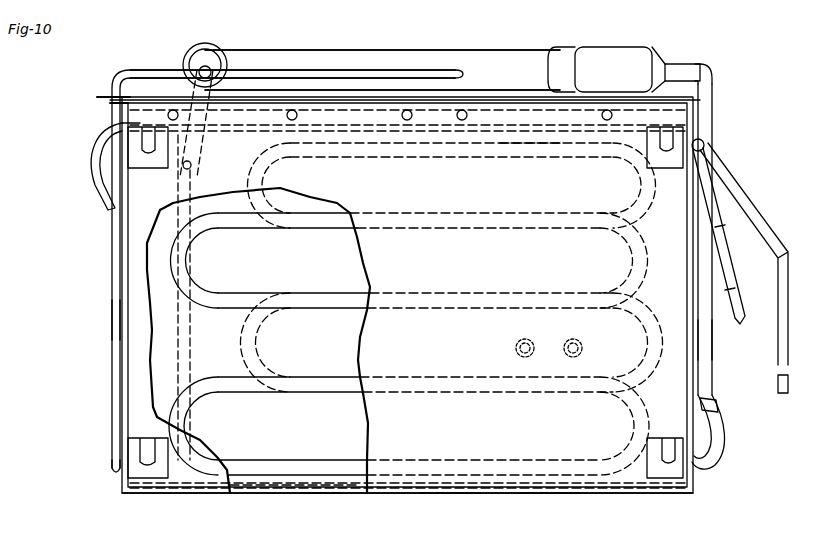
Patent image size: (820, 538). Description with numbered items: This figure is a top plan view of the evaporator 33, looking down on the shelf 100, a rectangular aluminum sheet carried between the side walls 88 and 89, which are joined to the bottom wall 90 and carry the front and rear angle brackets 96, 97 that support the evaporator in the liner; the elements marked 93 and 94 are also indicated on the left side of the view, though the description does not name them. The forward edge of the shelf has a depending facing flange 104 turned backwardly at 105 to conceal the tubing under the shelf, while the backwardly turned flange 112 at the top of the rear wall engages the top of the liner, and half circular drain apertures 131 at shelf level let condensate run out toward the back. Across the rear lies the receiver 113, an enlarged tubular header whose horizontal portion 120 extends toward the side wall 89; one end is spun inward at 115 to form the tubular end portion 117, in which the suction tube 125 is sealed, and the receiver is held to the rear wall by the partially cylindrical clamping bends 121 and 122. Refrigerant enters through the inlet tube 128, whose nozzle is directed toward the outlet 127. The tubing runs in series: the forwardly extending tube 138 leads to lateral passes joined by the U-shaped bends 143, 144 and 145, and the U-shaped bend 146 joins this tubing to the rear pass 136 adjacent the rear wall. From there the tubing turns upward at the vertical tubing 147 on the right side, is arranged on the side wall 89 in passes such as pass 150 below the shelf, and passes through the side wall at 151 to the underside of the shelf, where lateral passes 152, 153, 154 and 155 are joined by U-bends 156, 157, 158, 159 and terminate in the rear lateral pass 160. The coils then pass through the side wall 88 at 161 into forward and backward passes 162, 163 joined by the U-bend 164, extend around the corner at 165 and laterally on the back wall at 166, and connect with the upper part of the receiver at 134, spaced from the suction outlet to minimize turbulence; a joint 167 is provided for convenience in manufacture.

The evaporator 33 is at (252, 493).
The side wall 88 is at (125, 385).
The side wall 89 is at (697, 340).
The bottom wall 90 is at (315, 493).
The top plate edge 93 is at (97, 98).
The bottom frame edge 94 is at (122, 493).
The front angle bracket 96 is at (145, 480).
The rear angle bracket 97 is at (135, 169).
The shelf 100 is at (362, 430).
The facing flange 104 is at (442, 493).
The backwardly turned portion of facing flange 105 is at (537, 493).
The backwardly turned flange 112 is at (485, 100).
The receiver 113 is at (370, 40).
The spun-inward end 115 is at (640, 50).
The tubular end portion 117 is at (660, 63).
The horizontal portion of receiver 120 is at (470, 40).
The clamping bend 121 is at (565, 50).
The clamping bend 122 is at (205, 43).
The suction tube 125 is at (713, 68).
The outlet 127 is at (196, 155).
The inlet tube 128 is at (713, 103).
The drain apertures 131 is at (298, 114).
The receiver connection 134 is at (463, 74).
The rear pass 136 is at (405, 158).
The forwardly extending tube 138 is at (192, 352).
The U-shaped bend 143 is at (625, 418).
The U-shaped bend 144 is at (625, 266).
The U-shaped bend 145 is at (258, 352).
The U-shaped bend 146 is at (270, 181).
The vertical tubing 147 is at (706, 144).
The tubing pass 150 is at (706, 355).
The side wall pass-through 151 is at (700, 470).
The lateral pass 152 is at (240, 462).
The lateral pass 153 is at (240, 396).
The lateral pass 154 is at (242, 293).
The lateral pass 155 is at (240, 230).
The U-bend 156 is at (190, 410).
The U-bend 157 is at (645, 338).
The U-bend 158 is at (192, 290).
The U-bend 159 is at (640, 185).
The rear lateral pass 160 is at (515, 158).
The side wall pass-through 161 is at (128, 122).
The forward and backward pass 162 is at (105, 215).
The forward and backward pass 163 is at (112, 318).
The U-bend 164 is at (112, 468).
The corner tubing 165 is at (118, 73).
The back wall tubing 166 is at (280, 70).
The joint 167 is at (718, 406).